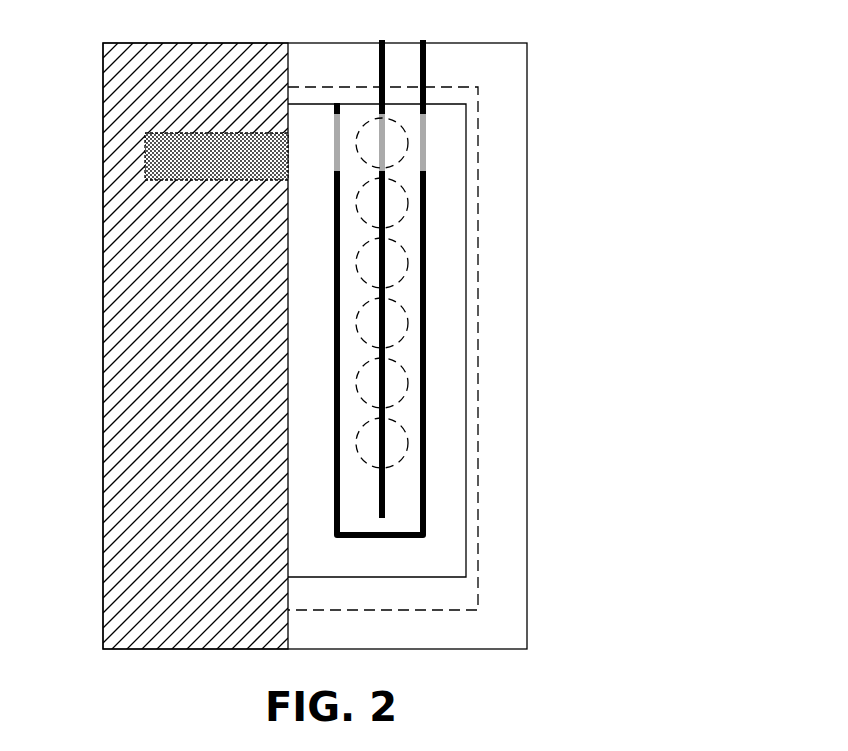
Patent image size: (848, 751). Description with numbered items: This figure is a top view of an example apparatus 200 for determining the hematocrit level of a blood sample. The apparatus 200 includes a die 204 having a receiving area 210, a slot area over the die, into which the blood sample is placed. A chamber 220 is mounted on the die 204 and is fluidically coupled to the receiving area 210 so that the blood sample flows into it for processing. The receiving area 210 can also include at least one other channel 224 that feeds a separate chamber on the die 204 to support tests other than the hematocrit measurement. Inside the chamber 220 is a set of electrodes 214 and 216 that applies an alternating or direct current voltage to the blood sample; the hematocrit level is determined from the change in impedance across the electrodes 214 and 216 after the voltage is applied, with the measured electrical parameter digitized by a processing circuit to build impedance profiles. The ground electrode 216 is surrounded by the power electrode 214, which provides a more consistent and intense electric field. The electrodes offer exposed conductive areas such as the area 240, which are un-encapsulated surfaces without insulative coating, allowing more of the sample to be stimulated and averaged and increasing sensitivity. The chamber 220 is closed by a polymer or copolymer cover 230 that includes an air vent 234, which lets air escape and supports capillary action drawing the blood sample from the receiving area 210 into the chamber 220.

The apparatus 200 is at (598, 64).
The die 204 is at (488, 43).
The receiving area 210 is at (203, 44).
The power electrode 214 is at (428, 86).
The ground electrode 216 is at (379, 86).
The chamber 220 is at (378, 577).
The channel 224 is at (146, 158).
The cover 230 is at (405, 610).
The air vent 234 is at (395, 428).
The exposed conductive area 240 is at (423, 153).